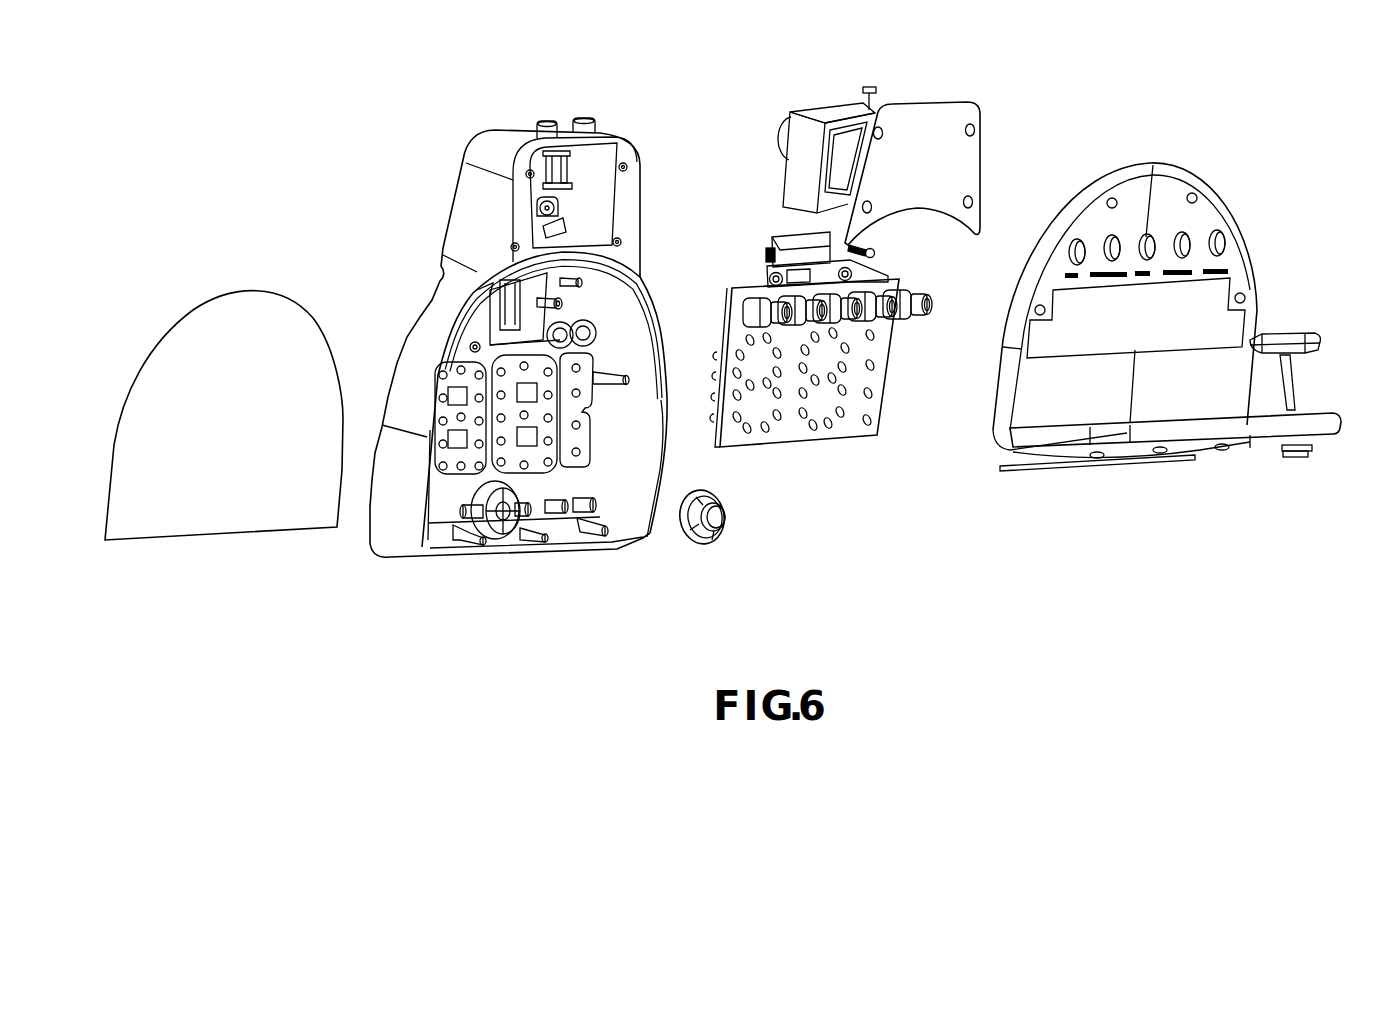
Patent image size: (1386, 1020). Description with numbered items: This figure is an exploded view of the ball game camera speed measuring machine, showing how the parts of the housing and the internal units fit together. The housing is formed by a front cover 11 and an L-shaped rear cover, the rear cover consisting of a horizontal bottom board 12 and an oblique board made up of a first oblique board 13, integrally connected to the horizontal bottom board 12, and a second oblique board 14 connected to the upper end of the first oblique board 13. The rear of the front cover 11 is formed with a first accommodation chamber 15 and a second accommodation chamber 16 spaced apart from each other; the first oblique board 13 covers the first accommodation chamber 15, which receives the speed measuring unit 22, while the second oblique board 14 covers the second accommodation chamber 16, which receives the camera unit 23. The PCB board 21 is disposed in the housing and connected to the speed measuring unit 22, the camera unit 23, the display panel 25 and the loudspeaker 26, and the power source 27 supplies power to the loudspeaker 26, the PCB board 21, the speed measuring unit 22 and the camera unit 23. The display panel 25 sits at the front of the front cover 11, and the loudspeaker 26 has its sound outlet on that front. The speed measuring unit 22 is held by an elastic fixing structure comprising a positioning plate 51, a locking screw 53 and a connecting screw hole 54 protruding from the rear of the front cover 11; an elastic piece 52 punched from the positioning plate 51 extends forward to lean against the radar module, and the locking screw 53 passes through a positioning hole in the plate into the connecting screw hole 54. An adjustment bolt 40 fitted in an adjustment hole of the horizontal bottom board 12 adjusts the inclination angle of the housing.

The front cover 11 is at (393, 515).
The horizontal bottom board 12 is at (1215, 430).
The first oblique board 13 is at (1162, 198).
The second oblique board 14 is at (940, 122).
The first accommodation chamber 15 is at (587, 310).
The second accommodation chamber 16 is at (577, 212).
The PCB board 21 is at (848, 427).
The speed measuring unit 22 is at (817, 247).
The camera unit 23 is at (798, 133).
The display panel 25 is at (243, 322).
The loudspeaker 26 is at (718, 520).
The power source 27 is at (1210, 332).
The adjustment bolt 40 is at (1293, 335).
The positioning plate 51 is at (813, 277).
The elastic piece 52 is at (850, 252).
The locking screw 53 is at (852, 275).
The connecting screw hole 54 is at (560, 307).